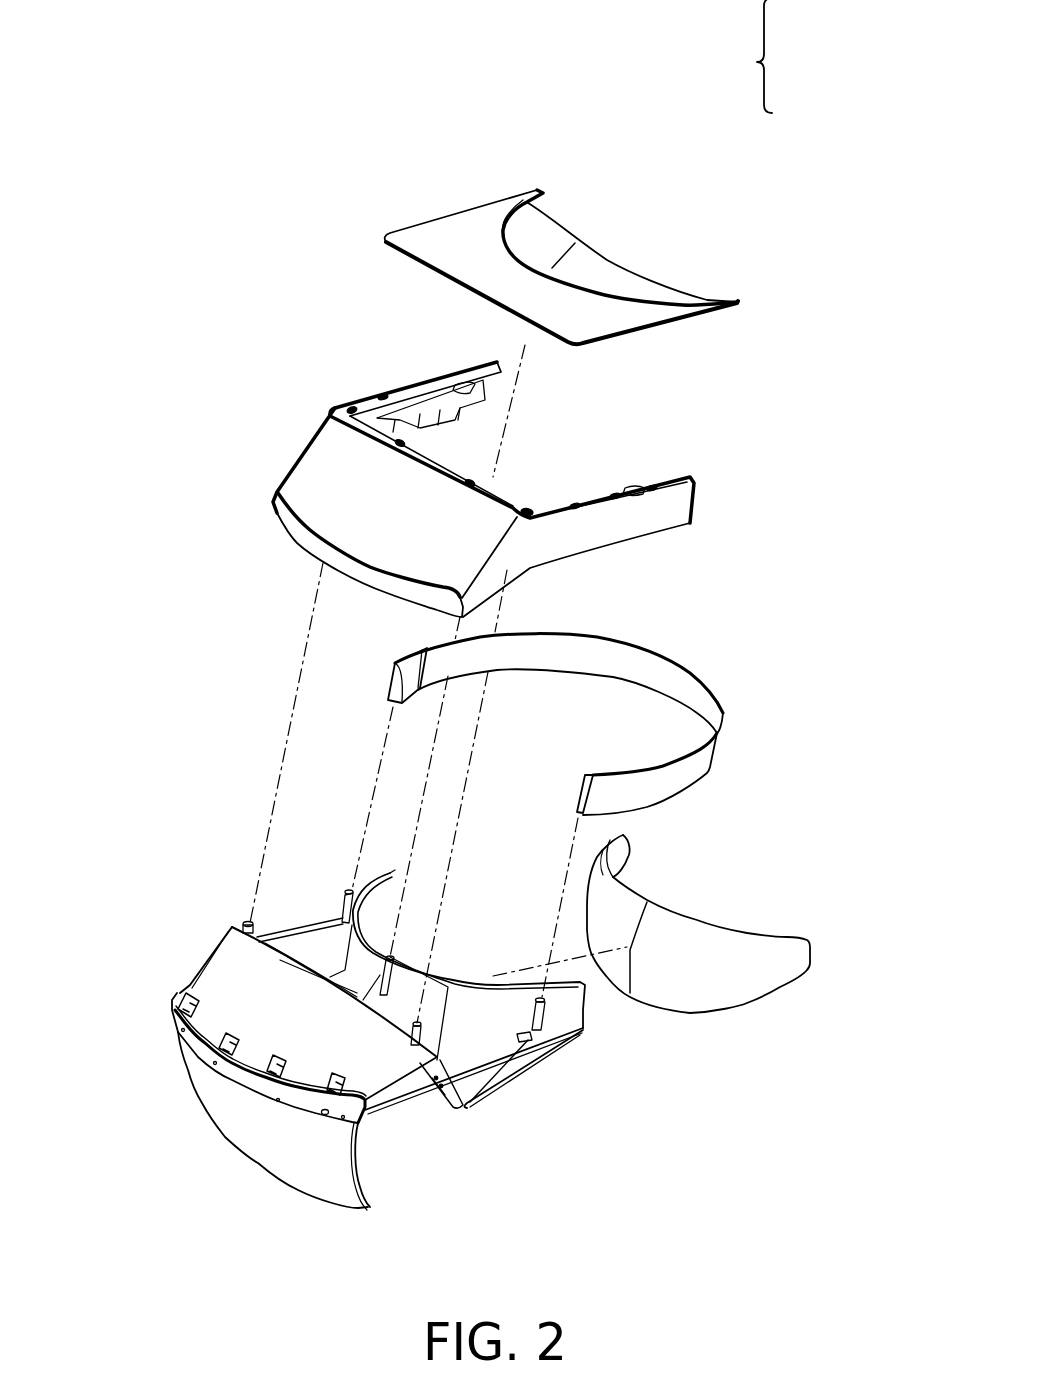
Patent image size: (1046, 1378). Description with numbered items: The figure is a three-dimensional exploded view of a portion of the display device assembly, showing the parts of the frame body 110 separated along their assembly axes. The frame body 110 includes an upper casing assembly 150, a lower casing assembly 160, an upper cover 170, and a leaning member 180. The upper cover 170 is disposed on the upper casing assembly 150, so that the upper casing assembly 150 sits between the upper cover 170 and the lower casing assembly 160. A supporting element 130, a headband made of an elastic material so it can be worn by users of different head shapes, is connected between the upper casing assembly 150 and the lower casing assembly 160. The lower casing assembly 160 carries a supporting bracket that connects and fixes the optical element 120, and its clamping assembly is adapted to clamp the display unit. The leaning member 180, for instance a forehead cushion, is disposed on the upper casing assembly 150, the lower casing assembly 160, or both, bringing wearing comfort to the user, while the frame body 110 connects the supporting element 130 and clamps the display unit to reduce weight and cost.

The frame body 110 is at (766, 60).
The optical element 120 is at (262, 1143).
The supporting element 130 is at (682, 685).
The upper casing assembly 150 is at (317, 472).
The lower casing assembly 160 is at (222, 970).
The upper cover 170 is at (430, 235).
The leaning member 180 is at (712, 998).